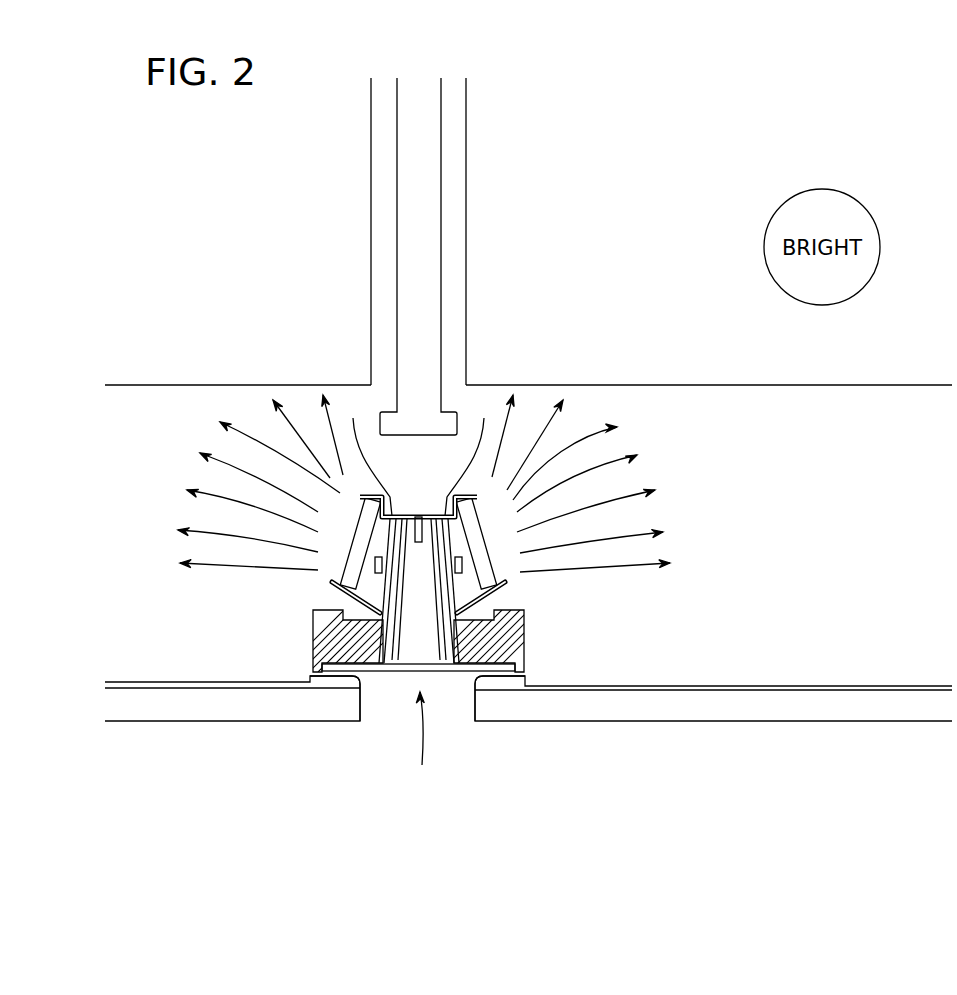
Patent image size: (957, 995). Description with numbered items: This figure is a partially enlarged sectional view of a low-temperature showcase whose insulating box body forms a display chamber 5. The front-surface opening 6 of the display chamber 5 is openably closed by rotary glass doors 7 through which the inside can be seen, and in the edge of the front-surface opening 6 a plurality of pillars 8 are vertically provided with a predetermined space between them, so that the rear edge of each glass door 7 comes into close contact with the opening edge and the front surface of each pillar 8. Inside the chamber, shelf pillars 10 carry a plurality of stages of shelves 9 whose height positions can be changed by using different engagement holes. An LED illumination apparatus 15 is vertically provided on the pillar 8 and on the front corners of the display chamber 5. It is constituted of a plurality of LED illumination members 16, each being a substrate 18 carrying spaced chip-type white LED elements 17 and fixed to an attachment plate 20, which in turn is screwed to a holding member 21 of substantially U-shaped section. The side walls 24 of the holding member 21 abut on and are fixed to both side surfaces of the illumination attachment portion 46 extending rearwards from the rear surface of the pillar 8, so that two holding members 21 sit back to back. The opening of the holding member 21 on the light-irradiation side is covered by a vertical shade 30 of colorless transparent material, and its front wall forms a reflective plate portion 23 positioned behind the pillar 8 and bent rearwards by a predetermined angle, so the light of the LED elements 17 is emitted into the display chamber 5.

The display chamber 5 is at (628, 206).
The front-surface opening 6 is at (545, 655).
The rotary glass door 7 is at (182, 702).
The pillar 8 is at (419, 744).
The shelf 9 is at (133, 374).
The shelf pillar 10 is at (466, 385).
The LED illumination apparatus 15 is at (652, 621).
The LED illumination member 16 is at (420, 466).
The LED element 17 is at (350, 565).
The substrate 18 is at (318, 532).
The attachment plate 20 is at (378, 613).
The holding member 21 is at (510, 490).
The reflective plate portion 23 is at (333, 584).
The side wall 24 is at (315, 625).
The shade 30 is at (358, 502).
The illumination attachment portion 46 is at (388, 607).